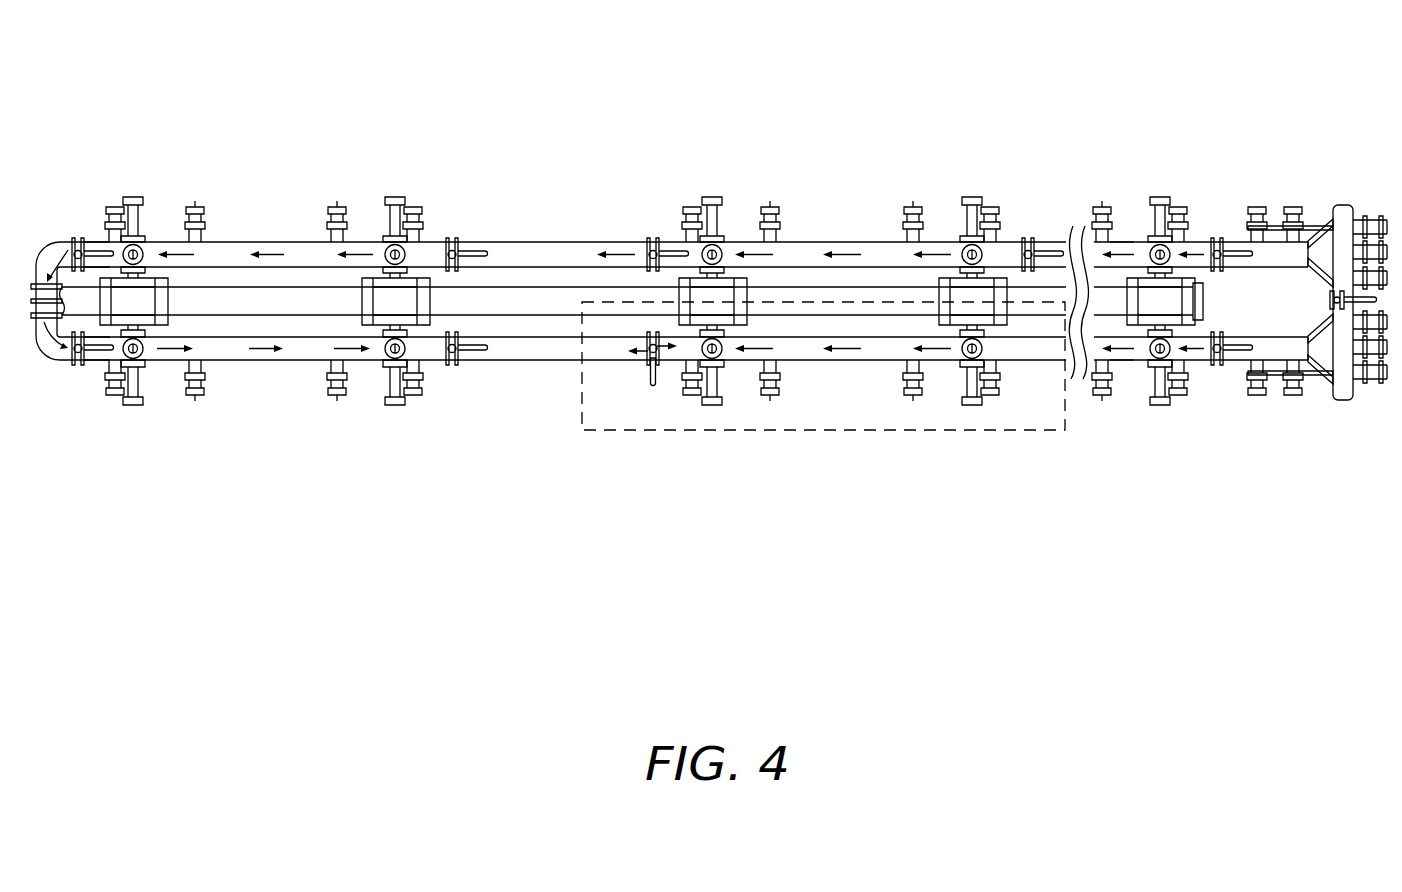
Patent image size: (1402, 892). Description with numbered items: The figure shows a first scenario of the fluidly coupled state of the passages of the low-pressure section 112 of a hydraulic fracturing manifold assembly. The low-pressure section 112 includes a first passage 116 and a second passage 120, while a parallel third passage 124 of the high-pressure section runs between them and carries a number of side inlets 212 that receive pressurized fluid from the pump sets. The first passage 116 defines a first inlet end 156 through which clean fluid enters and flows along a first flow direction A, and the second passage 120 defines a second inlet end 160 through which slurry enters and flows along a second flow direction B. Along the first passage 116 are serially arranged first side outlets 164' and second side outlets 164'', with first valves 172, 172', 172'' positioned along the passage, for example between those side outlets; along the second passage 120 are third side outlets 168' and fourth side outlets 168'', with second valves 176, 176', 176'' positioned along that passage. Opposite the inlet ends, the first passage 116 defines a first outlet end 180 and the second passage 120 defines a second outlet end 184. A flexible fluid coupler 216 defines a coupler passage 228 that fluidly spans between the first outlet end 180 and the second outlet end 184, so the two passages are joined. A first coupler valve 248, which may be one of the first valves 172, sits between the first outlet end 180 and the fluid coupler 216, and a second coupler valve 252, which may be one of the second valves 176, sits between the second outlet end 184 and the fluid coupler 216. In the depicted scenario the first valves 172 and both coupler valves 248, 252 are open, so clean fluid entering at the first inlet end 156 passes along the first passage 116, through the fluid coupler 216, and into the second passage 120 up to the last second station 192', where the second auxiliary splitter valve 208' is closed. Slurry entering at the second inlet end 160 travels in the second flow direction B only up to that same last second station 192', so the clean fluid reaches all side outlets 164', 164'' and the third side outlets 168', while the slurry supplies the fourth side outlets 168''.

The low-pressure section 112 is at (1233, 361).
The first passage 116 is at (878, 242).
The second passage 120 is at (855, 361).
The third passage 124 is at (570, 286).
The first inlet end 156 is at (1209, 238).
The second inlet end 160 is at (1200, 368).
The first side outlets 164' is at (264, 171).
The second side outlets 164'' is at (841, 171).
The third side outlets 168' is at (264, 435).
The fourth side outlets 168'' is at (841, 435).
The first valve 172 is at (88, 200).
The first valve 172' is at (765, 214).
The first valve 172'' is at (668, 224).
The second valve 176 is at (94, 407).
The second valve 176' is at (469, 377).
The second valve 176'' is at (622, 371).
The first outlet end 180 is at (88, 242).
The second outlet end 184 is at (88, 366).
The last second station 192' is at (823, 406).
The second auxiliary splitter valve 208' is at (638, 415).
The side inlets 212 is at (385, 236).
The fluid coupler 216 is at (42, 249).
The coupler passage 228 is at (50, 358).
The first coupler valve 248 is at (99, 246).
The second coupler valve 252 is at (97, 368).
The first flow direction A is at (1122, 242).
The second flow direction B is at (1125, 361).